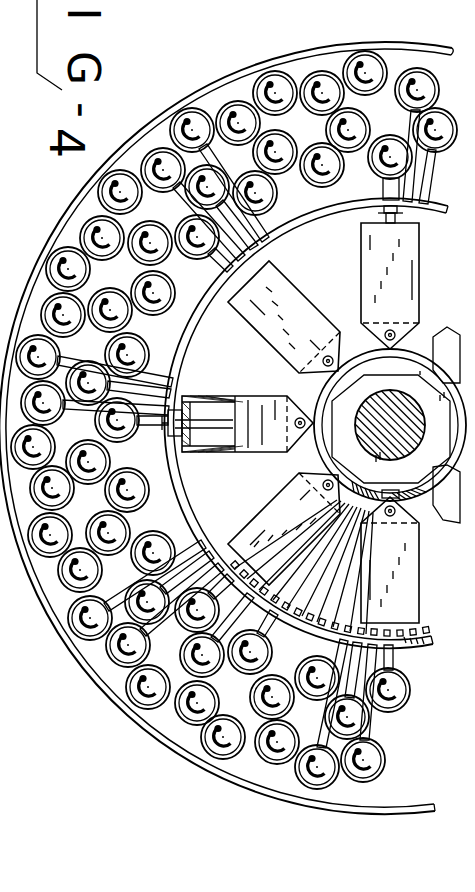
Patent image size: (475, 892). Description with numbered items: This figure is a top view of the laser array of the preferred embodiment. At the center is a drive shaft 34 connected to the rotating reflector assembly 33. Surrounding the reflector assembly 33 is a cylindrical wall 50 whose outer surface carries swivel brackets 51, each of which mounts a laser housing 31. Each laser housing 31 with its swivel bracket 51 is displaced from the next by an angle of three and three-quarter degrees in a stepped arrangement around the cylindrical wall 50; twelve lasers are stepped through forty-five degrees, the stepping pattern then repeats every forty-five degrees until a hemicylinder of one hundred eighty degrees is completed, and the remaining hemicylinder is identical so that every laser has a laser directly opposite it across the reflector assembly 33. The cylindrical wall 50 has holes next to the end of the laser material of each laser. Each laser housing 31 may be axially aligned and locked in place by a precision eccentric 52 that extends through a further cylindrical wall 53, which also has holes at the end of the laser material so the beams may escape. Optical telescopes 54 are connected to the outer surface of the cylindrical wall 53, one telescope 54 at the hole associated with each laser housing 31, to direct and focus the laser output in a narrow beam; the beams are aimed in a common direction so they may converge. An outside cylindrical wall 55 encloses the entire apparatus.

The laser housing 31 is at (405, 584).
The rotating reflector assembly 33 is at (425, 387).
The drive shaft 34 is at (365, 440).
The cylindrical wall 50 is at (380, 343).
The swivel bracket 51 is at (408, 502).
The precision eccentric 52 is at (230, 620).
The cylindrical wall 53 is at (425, 655).
The optical telescope 54 is at (403, 712).
The outside cylindrical wall 55 is at (420, 813).